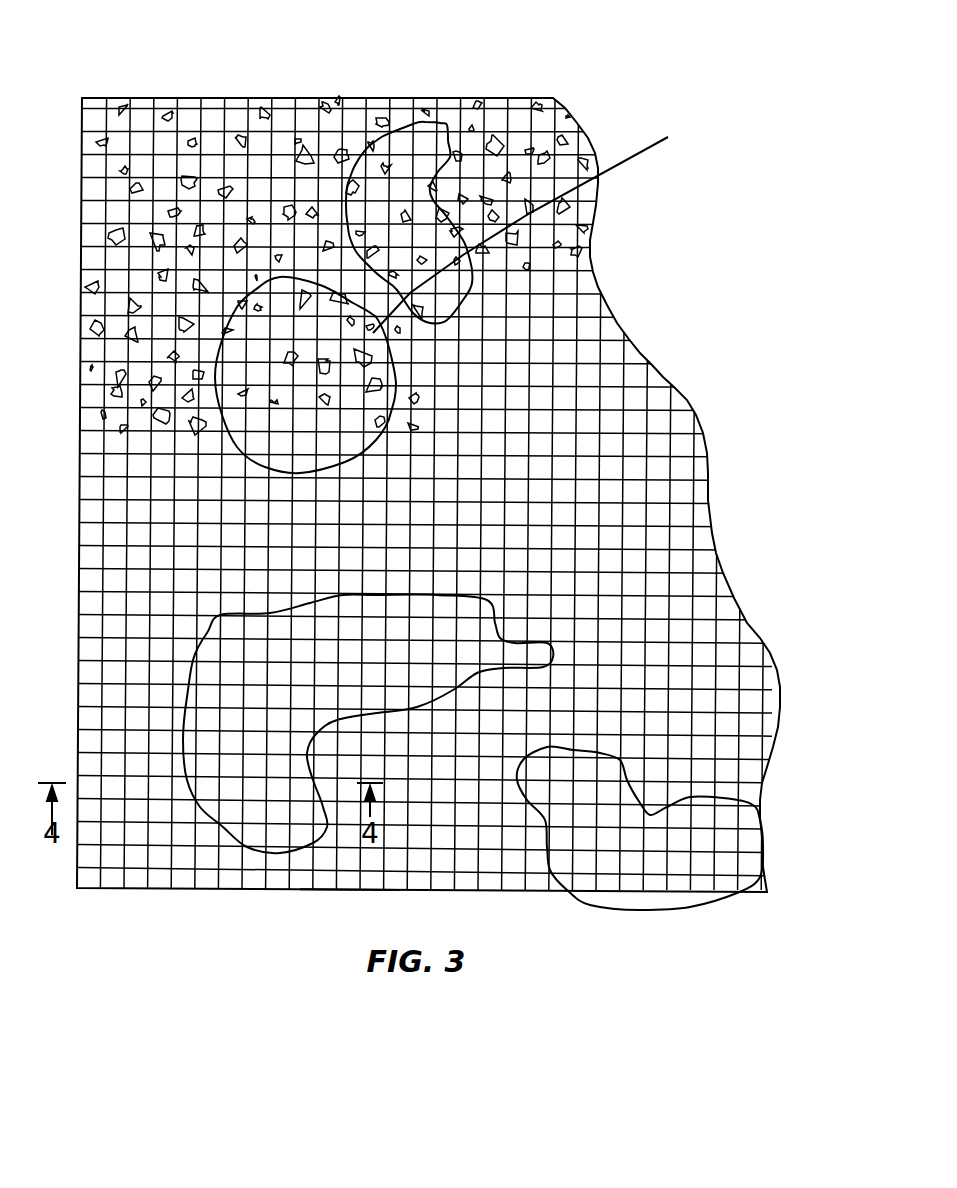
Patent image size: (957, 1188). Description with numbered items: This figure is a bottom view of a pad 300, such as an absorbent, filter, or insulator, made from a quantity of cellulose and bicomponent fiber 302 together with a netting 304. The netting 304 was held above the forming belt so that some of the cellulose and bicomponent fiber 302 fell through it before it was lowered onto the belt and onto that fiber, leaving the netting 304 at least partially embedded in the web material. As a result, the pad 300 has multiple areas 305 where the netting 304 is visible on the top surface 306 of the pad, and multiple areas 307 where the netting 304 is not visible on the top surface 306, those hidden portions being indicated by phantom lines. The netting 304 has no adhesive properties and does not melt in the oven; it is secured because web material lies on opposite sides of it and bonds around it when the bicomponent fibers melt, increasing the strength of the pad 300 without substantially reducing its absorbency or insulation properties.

The pad 300 is at (720, 212).
The cellulose and bicomponent fiber 302 is at (257, 882).
The netting 304 is at (346, 880).
The areas where the netting is visible 305 is at (280, 277).
The top surface 306 is at (113, 123).
The areas where the netting is not visible 307 is at (224, 836).